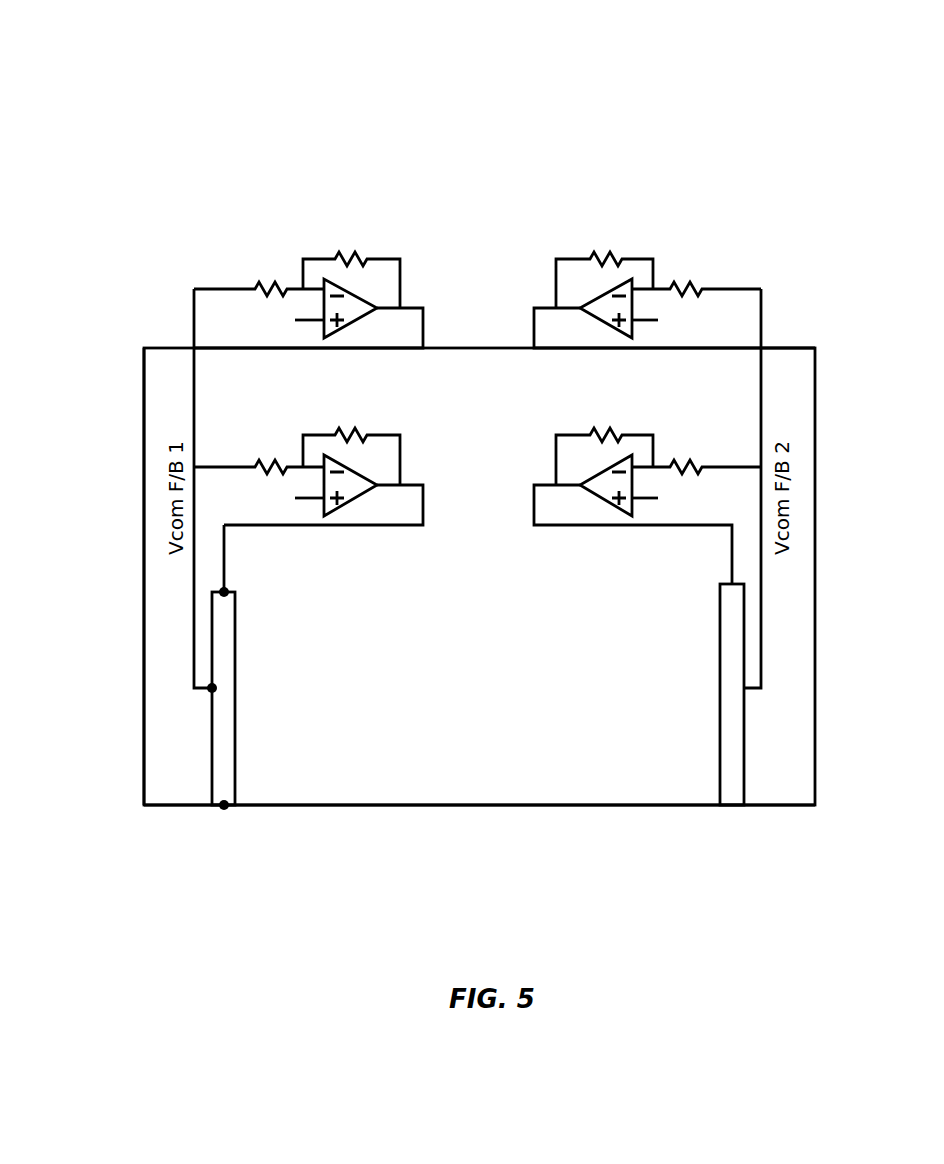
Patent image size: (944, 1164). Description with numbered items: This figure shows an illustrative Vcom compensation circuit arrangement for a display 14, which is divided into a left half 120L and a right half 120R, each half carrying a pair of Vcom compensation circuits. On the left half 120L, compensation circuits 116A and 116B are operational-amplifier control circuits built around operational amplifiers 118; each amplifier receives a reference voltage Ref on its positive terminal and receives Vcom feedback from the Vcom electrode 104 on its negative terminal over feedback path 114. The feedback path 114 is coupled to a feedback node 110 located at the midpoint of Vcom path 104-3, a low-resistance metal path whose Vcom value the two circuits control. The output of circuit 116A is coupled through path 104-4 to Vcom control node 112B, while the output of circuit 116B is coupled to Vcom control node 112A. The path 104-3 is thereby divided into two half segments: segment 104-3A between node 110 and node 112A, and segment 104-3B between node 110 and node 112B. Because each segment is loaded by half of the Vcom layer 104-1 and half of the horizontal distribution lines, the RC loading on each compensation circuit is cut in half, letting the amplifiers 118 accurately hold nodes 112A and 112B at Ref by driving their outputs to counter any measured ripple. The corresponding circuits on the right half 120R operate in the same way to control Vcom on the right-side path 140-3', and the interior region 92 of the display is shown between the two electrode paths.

The display 14 is at (508, 82).
The left half 120L is at (452, 177).
The right half 120R is at (487, 177).
The Vcom compensation circuit 116A is at (435, 255).
The Vcom compensation circuit 116B is at (435, 432).
The operational amplifier 118 is at (358, 300).
The Vcom electrode 104 is at (427, 843).
The Vcom layer 104-1 is at (568, 805).
The path 104-4 is at (144, 535).
The Vcom path 104-3 is at (212, 732).
The segment 104-3A is at (257, 592).
The segment 104-3B is at (257, 702).
The feedback path 114 is at (195, 503).
The Vcom control node 112A is at (212, 591).
The Vcom control node 112B is at (223, 805).
The feedback node 110 is at (212, 689).
The active area 92 is at (476, 790).
The right common voltage electrode 140-3' is at (677, 694).